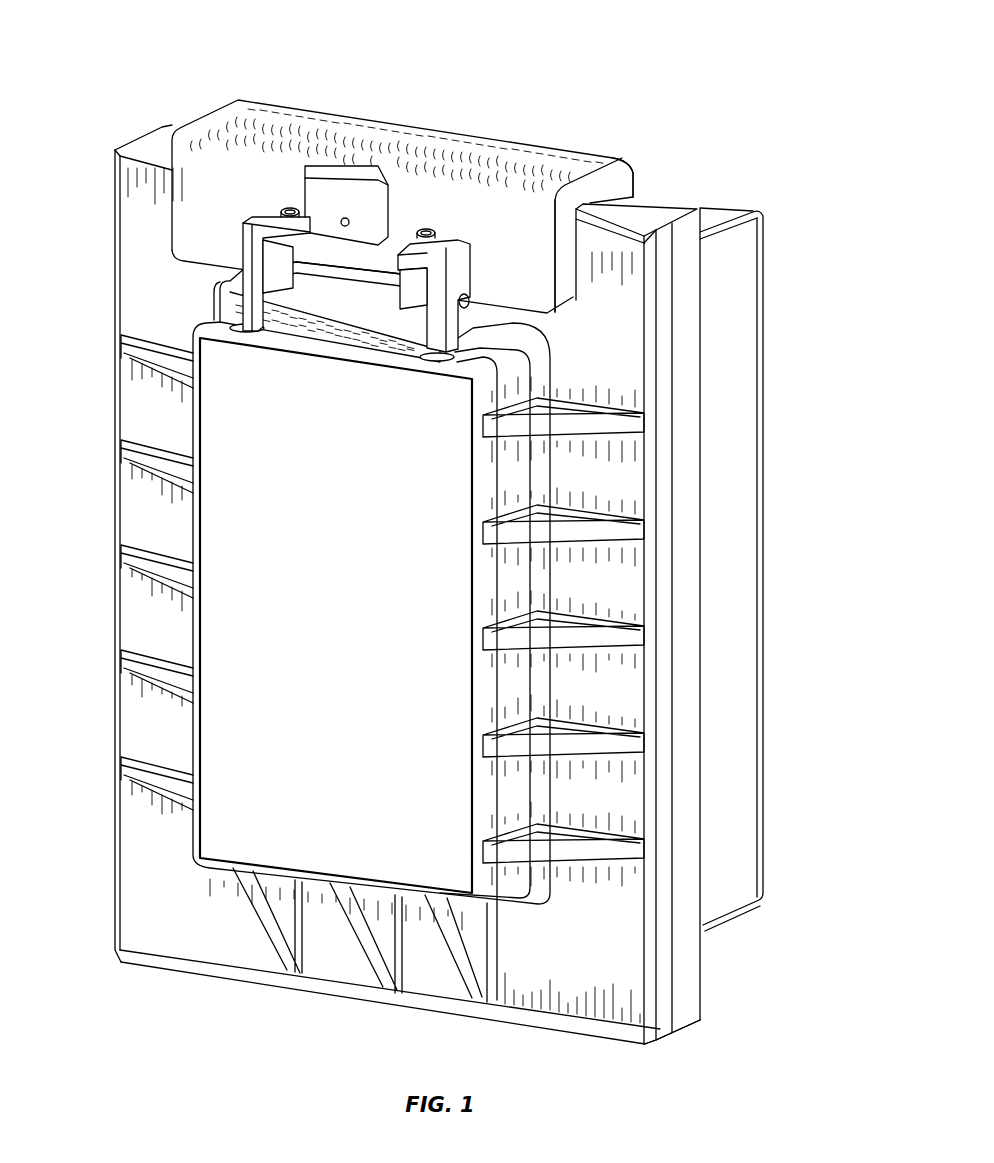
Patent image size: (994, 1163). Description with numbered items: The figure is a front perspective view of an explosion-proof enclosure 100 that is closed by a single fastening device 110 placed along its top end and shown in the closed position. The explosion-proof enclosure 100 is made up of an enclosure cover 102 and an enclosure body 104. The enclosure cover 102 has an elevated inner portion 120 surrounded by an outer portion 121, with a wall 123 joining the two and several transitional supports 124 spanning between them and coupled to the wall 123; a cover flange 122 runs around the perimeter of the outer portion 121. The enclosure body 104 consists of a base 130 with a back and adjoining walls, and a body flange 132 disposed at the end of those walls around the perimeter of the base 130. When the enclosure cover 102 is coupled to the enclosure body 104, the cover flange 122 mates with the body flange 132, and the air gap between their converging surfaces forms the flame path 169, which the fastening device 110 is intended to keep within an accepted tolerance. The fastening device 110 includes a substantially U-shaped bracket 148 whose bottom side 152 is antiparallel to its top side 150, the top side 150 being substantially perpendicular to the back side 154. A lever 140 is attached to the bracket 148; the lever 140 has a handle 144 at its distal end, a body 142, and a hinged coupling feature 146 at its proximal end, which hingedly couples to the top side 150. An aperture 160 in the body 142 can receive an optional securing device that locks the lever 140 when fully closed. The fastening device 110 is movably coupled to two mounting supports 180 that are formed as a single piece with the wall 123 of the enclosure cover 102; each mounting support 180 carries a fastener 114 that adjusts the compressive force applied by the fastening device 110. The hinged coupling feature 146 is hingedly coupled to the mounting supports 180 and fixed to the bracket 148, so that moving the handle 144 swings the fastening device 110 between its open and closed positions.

The explosion-proof enclosure 100 is at (712, 56).
The enclosure cover 102 is at (113, 630).
The enclosure body 104 is at (772, 481).
The fastening device 110 is at (414, 112).
The fastener 114 is at (287, 208).
The elevated inner portion 120 is at (310, 610).
The outer portion 121 is at (574, 360).
The cover flange 122 is at (126, 146).
The wall 123 is at (515, 462).
The transitional supports 124 is at (128, 362).
The base 130 is at (752, 619).
The body flange 132 is at (663, 212).
The lever 140 is at (404, 224).
The body 142 is at (357, 254).
The handle 144 is at (338, 178).
The hinged coupling feature 146 is at (326, 315).
The bracket 148 is at (240, 97).
The top side 150 is at (527, 240).
The bottom side 152 is at (633, 177).
The back side 154 is at (500, 160).
The aperture 160 is at (344, 217).
The flame path 169 is at (690, 1026).
The mounting support 180 is at (250, 258).